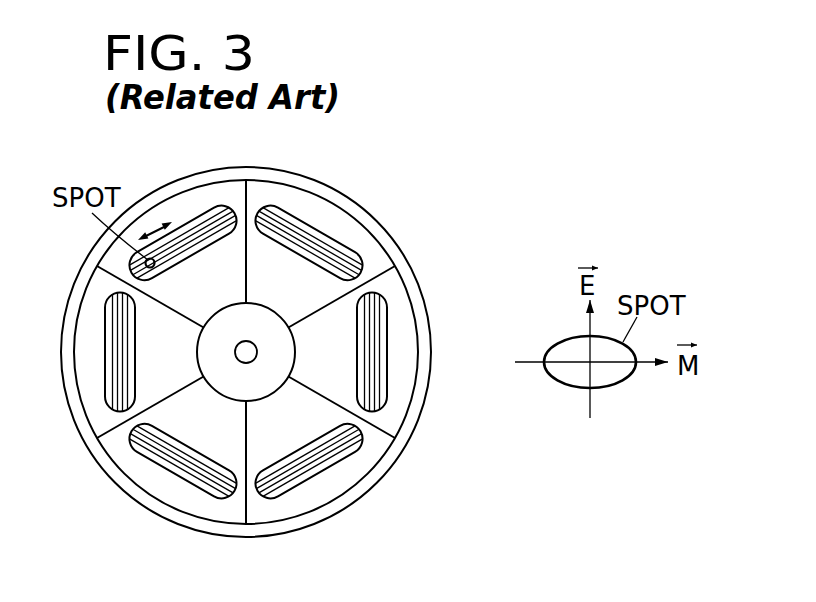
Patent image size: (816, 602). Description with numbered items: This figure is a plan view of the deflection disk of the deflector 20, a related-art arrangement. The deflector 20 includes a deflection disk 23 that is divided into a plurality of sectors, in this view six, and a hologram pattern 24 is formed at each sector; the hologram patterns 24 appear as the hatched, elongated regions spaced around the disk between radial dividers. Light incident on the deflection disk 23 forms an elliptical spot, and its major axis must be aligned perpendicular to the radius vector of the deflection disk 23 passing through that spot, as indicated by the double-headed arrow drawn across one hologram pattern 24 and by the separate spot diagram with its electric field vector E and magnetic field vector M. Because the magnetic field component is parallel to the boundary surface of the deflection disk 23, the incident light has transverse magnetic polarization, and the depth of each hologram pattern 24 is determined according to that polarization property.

The deflector 20 is at (410, 247).
The deflection disk 23 is at (395, 442).
The hologram pattern 24 is at (318, 463).